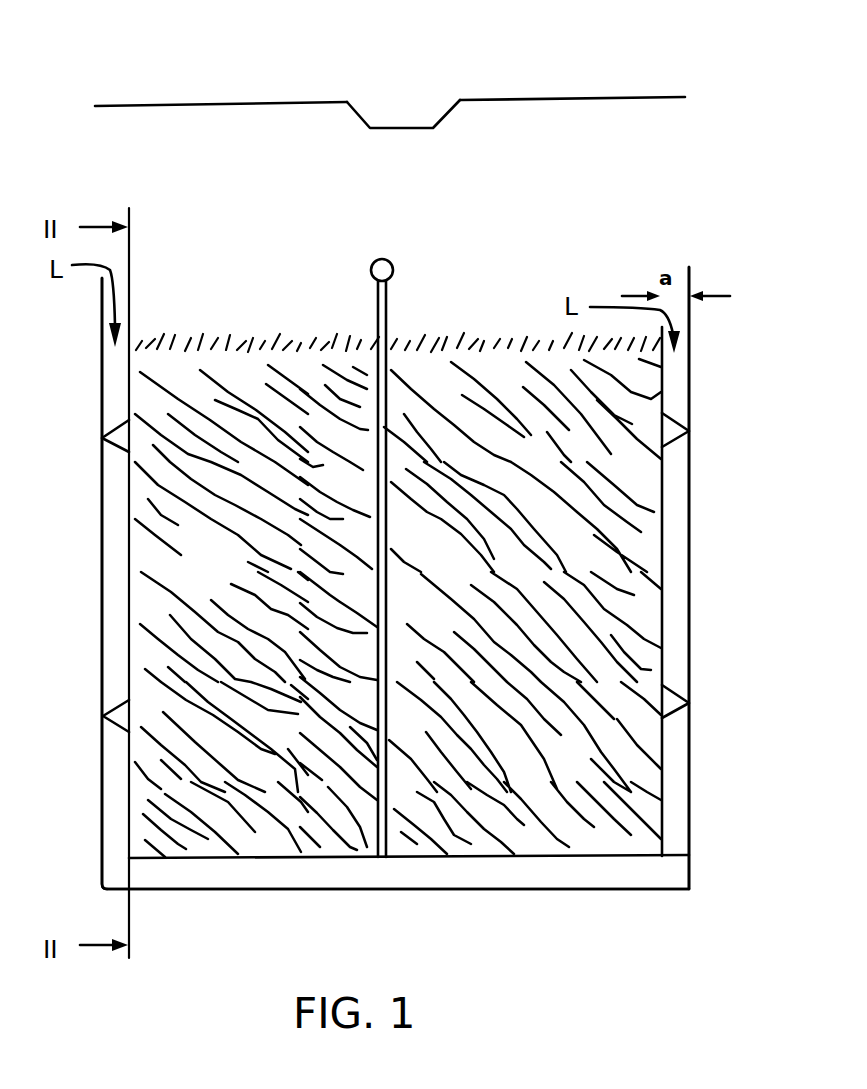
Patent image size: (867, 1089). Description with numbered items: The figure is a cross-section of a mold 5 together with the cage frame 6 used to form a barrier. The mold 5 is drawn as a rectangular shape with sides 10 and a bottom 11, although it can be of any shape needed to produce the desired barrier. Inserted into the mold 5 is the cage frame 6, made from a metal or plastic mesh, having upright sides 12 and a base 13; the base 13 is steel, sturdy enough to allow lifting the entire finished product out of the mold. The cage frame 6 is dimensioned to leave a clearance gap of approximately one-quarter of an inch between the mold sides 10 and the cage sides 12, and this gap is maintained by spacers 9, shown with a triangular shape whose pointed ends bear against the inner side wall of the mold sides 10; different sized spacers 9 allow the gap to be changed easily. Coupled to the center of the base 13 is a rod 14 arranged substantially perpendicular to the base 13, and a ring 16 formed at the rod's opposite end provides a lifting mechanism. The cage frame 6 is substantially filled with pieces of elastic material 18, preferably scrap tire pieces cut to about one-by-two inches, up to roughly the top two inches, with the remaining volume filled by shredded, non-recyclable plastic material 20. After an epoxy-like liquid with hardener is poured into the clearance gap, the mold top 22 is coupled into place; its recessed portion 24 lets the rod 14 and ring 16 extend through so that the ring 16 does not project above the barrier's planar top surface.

The mold 5 is at (726, 624).
The cage frame 6 is at (155, 593).
The spacers 9 is at (126, 450).
The mold sides 10 is at (690, 525).
The mold bottom 11 is at (422, 890).
The cage frame sides 12 is at (666, 752).
The cage base 13 is at (603, 862).
The rod 14 is at (388, 582).
The ring 16 is at (384, 259).
The elastic material 18 is at (176, 777).
The shredded non-recyclable plastic material 20 is at (197, 360).
The mold top 22 is at (632, 97).
The recessed portion 24 is at (407, 127).